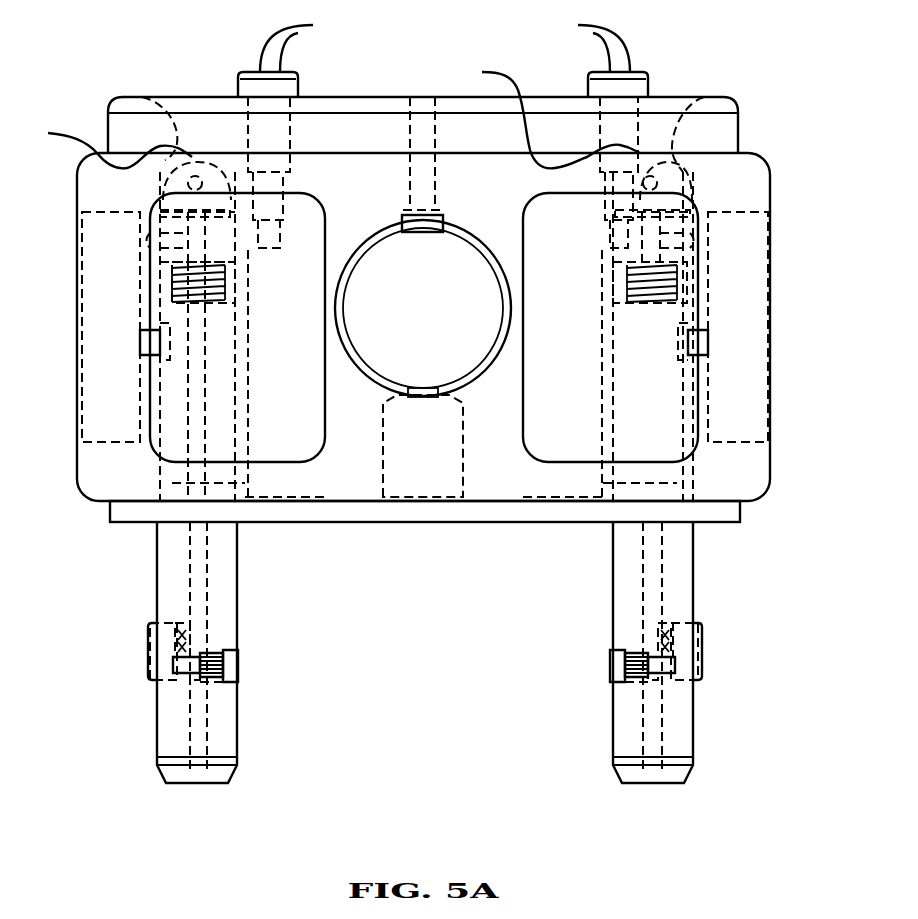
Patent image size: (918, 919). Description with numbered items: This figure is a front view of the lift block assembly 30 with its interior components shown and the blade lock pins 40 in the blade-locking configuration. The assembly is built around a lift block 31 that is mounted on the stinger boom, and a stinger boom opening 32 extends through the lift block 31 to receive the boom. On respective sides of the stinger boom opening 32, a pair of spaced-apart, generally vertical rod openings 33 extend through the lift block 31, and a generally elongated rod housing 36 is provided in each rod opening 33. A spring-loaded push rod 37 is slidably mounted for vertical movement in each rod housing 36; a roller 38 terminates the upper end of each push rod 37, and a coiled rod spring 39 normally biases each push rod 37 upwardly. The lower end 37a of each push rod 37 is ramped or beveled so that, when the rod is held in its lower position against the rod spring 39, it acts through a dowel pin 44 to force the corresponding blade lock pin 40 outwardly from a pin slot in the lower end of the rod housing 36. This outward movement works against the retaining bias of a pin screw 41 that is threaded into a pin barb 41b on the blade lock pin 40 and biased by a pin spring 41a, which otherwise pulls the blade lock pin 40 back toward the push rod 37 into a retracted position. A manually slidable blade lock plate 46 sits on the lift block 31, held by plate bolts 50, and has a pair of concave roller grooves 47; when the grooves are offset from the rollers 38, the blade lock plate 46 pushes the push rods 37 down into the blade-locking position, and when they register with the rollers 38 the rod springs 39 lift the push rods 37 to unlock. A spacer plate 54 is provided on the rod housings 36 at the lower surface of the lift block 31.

The lift block assembly 30 is at (793, 119).
The lift block 31 is at (770, 169).
The stinger boom opening 32 is at (410, 332).
The rod openings 33 is at (141, 97).
The rod housing 36 is at (222, 345).
The push rod 37 is at (198, 395).
The lower end 37a is at (150, 682).
The roller 38 is at (234, 252).
The rod spring 39 is at (243, 285).
The blade lock pin 40 is at (150, 642).
The pin screw 41 is at (228, 655).
The pin spring 41a is at (205, 662).
The pin barb 41b is at (208, 675).
The dowel pin 44 is at (185, 620).
The blade lock plate 46 is at (199, 97).
The roller grooves 47 is at (329, 114).
The plate bolts 50 is at (443, 133).
The spacer plate 54 is at (742, 503).